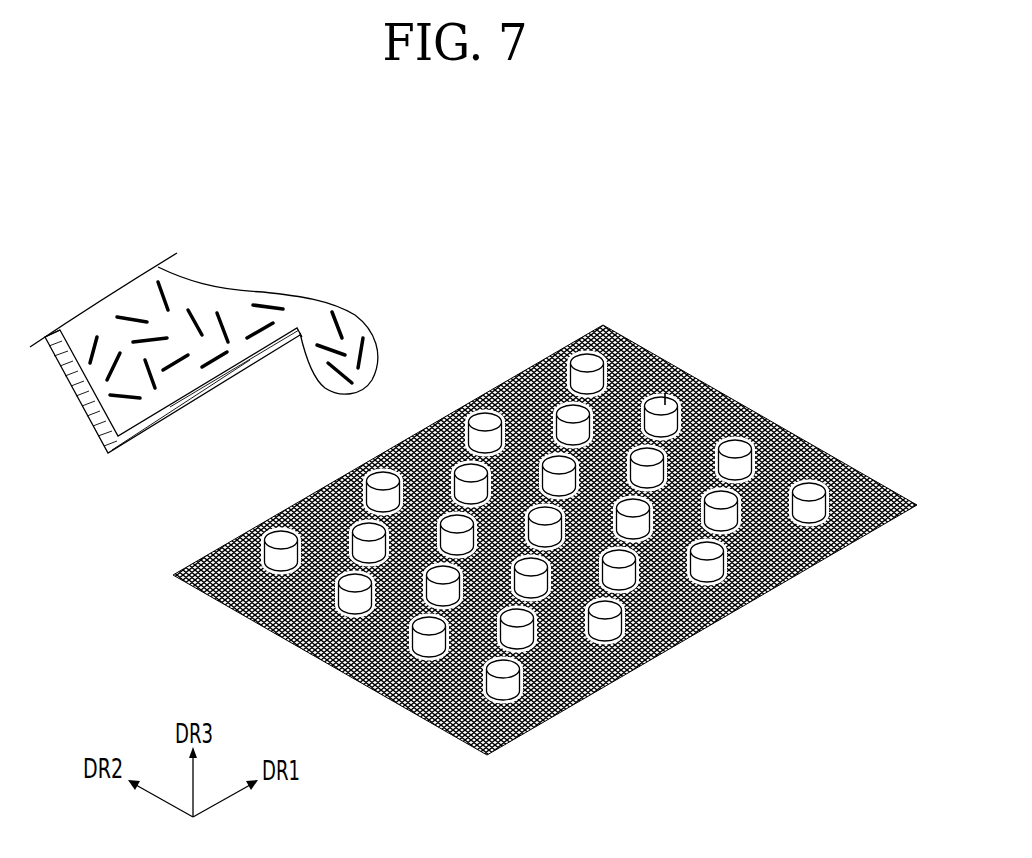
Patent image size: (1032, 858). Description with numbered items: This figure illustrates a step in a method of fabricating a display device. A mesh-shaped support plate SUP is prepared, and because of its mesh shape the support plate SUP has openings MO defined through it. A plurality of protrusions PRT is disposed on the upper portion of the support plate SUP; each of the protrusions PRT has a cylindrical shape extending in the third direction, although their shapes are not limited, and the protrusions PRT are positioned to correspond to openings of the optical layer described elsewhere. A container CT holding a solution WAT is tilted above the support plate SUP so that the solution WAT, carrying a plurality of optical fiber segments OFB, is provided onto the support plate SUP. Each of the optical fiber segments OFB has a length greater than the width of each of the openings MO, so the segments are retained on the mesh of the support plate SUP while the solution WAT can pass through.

The support plate SUP is at (822, 448).
The openings MO is at (712, 422).
The protrusions PRT is at (673, 392).
The container CT is at (222, 383).
The solution WAT is at (308, 310).
The optical fiber segments OFB is at (263, 303).